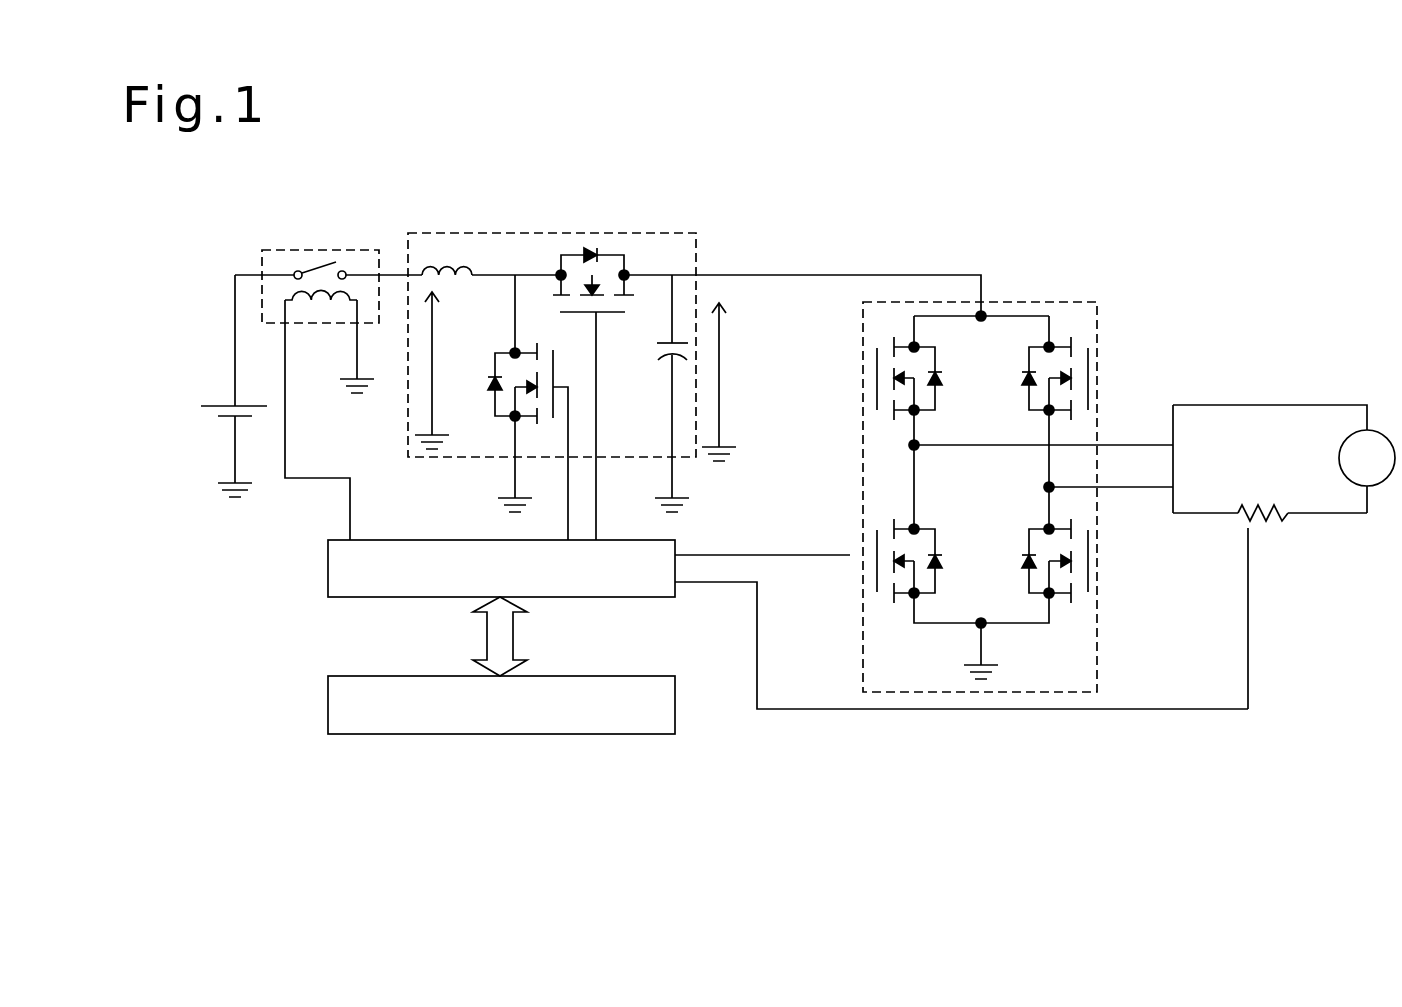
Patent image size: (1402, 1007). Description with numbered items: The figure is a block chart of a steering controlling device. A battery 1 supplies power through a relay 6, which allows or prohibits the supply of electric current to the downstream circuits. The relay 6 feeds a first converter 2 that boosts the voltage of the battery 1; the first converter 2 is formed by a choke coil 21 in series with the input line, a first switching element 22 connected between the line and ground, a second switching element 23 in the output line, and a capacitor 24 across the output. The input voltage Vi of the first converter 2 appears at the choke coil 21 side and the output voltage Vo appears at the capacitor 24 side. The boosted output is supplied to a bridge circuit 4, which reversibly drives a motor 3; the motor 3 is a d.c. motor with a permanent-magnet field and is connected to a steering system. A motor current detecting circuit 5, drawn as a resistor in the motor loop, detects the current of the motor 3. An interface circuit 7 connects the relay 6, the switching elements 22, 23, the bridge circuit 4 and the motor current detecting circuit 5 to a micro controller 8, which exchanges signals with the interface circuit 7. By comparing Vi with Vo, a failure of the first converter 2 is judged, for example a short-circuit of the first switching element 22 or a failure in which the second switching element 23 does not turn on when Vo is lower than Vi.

The battery 1 is at (223, 422).
The first converter 2 is at (546, 233).
The motor 3 is at (1352, 445).
The bridge circuit 4 is at (1060, 300).
The motor current detecting circuit 5 is at (1265, 528).
The relay 6 is at (310, 250).
The interface circuit 7 is at (337, 585).
The micro controller 8 is at (620, 718).
The choke coil 21 is at (430, 275).
The first switching element 22 is at (508, 422).
The second switching element 23 is at (606, 238).
The capacitor 24 is at (677, 335).